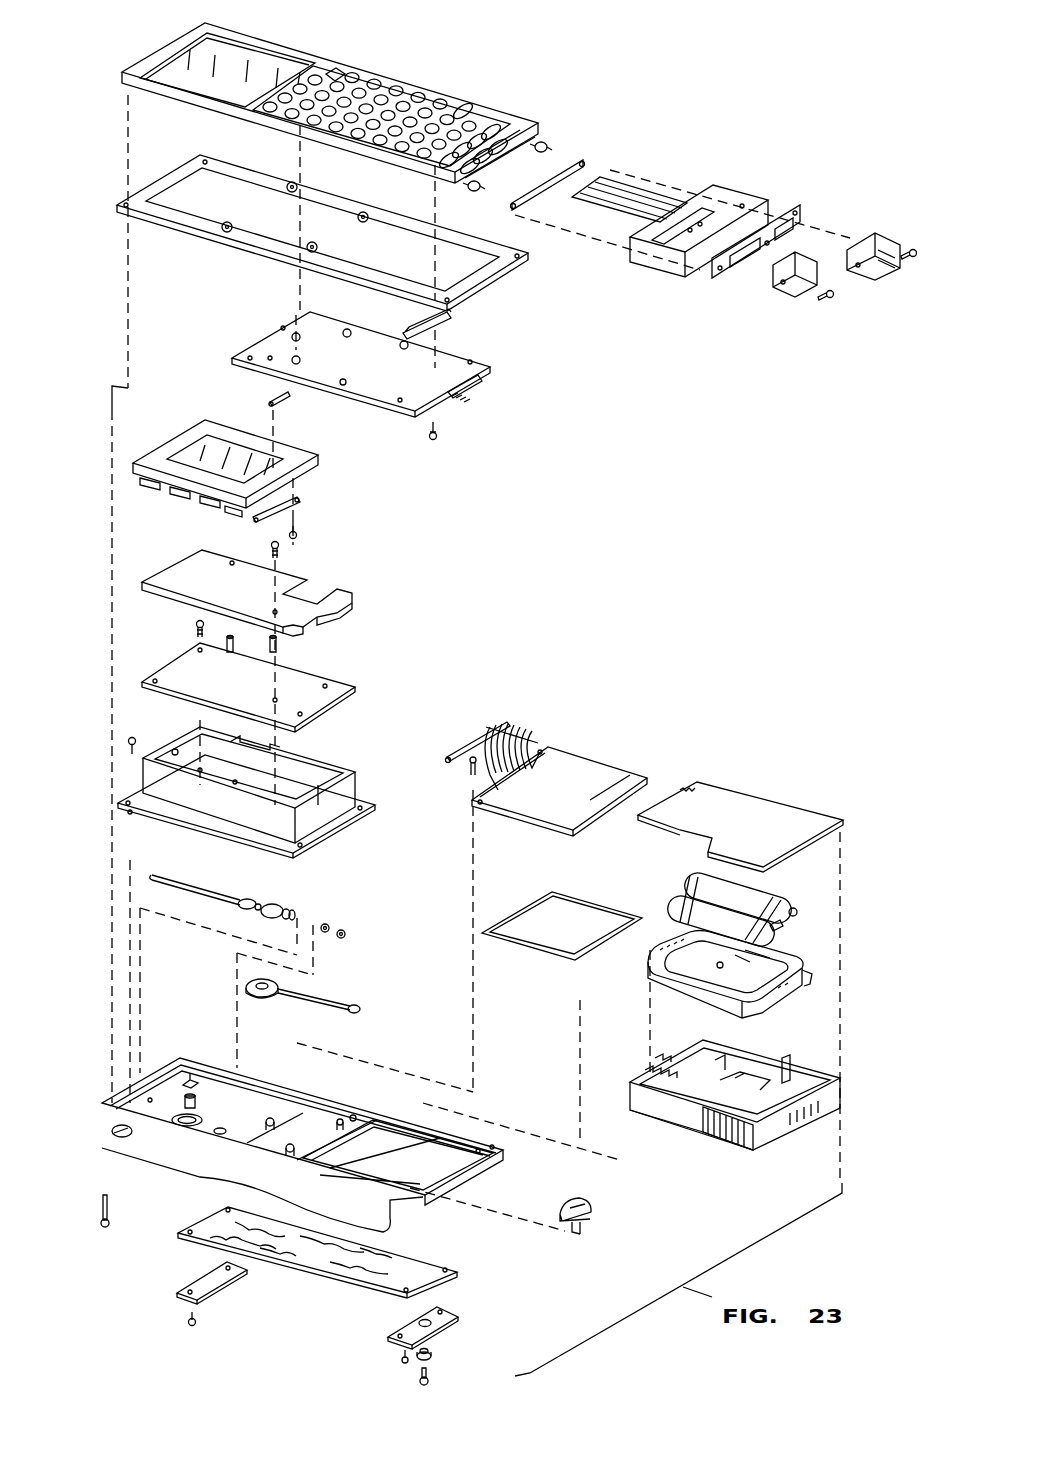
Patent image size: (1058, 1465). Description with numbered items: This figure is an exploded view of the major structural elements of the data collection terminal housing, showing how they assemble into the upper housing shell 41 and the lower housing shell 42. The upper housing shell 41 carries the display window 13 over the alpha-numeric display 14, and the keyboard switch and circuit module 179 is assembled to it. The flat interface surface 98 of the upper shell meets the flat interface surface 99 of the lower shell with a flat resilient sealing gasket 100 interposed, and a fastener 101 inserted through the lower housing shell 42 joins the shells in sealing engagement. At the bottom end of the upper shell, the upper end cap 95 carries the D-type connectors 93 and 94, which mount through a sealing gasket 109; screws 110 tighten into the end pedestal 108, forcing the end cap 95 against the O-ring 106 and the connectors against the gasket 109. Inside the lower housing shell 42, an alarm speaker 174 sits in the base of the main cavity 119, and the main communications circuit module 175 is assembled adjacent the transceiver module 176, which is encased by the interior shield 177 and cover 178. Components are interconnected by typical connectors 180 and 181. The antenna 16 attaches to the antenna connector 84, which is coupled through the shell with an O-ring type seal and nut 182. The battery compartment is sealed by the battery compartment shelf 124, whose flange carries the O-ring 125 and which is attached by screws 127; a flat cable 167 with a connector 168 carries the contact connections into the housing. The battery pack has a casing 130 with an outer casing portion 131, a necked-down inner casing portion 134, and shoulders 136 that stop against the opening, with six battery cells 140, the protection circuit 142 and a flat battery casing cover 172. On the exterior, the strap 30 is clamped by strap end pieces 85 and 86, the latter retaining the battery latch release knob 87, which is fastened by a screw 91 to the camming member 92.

The display window 13 is at (250, 52).
The upper housing shell 41 is at (337, 63).
The flat interface surface 98 is at (197, 117).
The end pedestal 108 is at (545, 147).
The O-ring 106 is at (580, 160).
The upper end cap 95 is at (722, 190).
The sealing gasket 109 is at (793, 208).
The D-type connector 94 is at (887, 232).
The screws 110 is at (915, 268).
The D-type connector 93 is at (775, 297).
The sealing gasket 100 is at (243, 245).
The connector 180 is at (450, 323).
The connector 181 is at (486, 370).
The alpha-numeric display 14 is at (175, 436).
The keyboard switch and circuit module 179 is at (392, 407).
The cover 178 is at (292, 573).
The transceiver module 176 is at (313, 672).
The interior shield 177 is at (345, 762).
The main communications circuit module 175 is at (340, 833).
The antenna 16 is at (172, 875).
The antenna connector 84 is at (260, 902).
The nut and O-ring seal 182 is at (299, 890).
The alarm speaker 174 is at (272, 998).
The main cavity 119 is at (200, 1073).
The flat interface surface 99 is at (320, 1100).
The lower housing shell 42 is at (101, 1142).
The fastener 101 is at (110, 1210).
The strap end piece 85 is at (185, 1283).
The strap 30 is at (313, 1272).
The strap end piece 86 is at (452, 1310).
The battery latch release knob 87 is at (433, 1352).
The screw 91 is at (433, 1378).
The camming member 92 is at (591, 1206).
The connector 168 is at (452, 756).
The flat cable 167 is at (505, 722).
The battery compartment shelf 124 is at (598, 763).
The screws 127 is at (468, 771).
The flat battery casing cover 172 is at (745, 795).
The O-ring 125 is at (540, 905).
The battery cells 140 is at (663, 876).
The circuit 142 is at (656, 992).
The inner casing portion 134 is at (728, 1046).
The shoulders 136 is at (785, 1058).
The casing 130 is at (698, 1160).
The outer casing portion 131 is at (727, 1150).